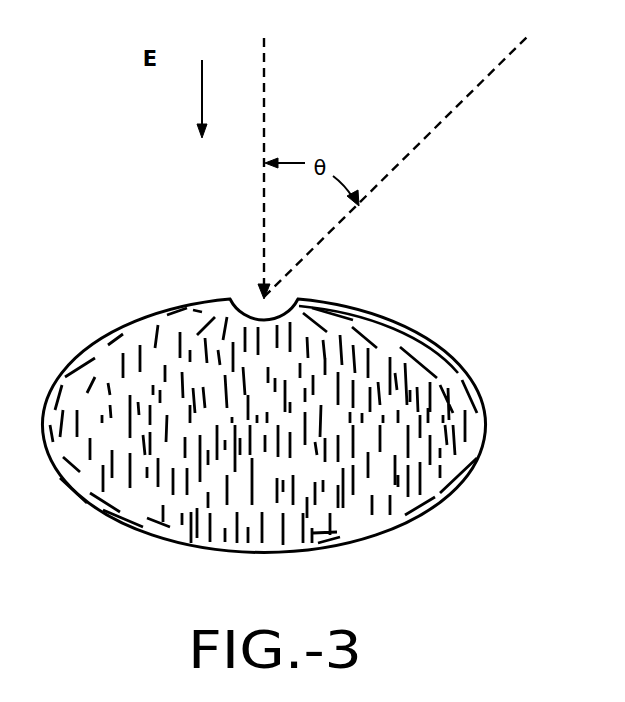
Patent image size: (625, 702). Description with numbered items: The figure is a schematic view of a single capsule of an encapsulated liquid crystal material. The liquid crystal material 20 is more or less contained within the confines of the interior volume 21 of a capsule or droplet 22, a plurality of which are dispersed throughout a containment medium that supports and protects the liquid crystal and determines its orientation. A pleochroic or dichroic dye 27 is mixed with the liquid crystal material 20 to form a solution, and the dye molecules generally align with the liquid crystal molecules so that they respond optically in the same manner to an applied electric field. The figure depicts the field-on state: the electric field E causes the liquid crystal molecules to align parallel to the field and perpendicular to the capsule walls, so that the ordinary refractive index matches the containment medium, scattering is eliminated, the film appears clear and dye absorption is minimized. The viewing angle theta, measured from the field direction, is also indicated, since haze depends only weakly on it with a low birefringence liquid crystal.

The liquid crystal material 20 is at (367, 336).
The interior volume 21 is at (393, 327).
The capsule 22 is at (483, 397).
The pleochroic or dichroic dye 27 is at (114, 402).